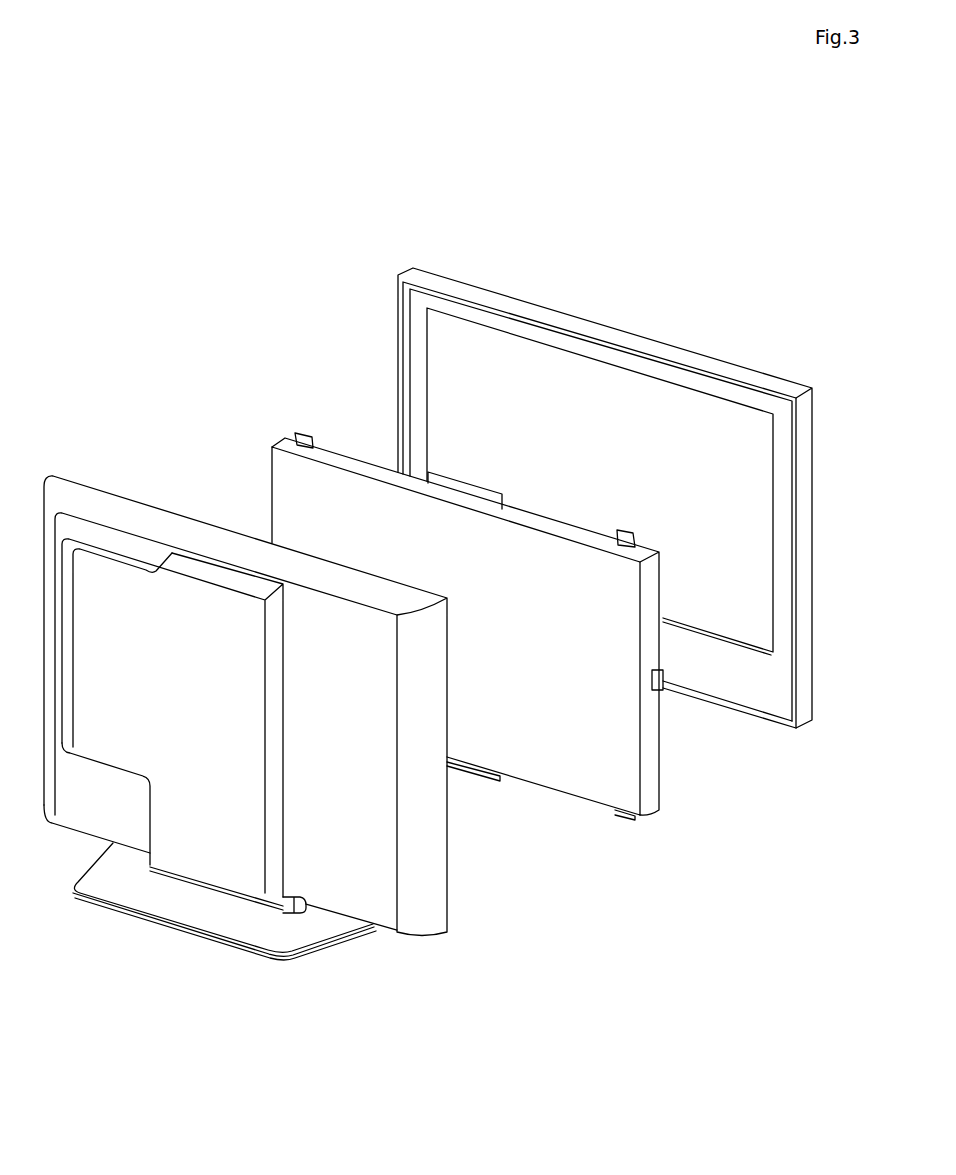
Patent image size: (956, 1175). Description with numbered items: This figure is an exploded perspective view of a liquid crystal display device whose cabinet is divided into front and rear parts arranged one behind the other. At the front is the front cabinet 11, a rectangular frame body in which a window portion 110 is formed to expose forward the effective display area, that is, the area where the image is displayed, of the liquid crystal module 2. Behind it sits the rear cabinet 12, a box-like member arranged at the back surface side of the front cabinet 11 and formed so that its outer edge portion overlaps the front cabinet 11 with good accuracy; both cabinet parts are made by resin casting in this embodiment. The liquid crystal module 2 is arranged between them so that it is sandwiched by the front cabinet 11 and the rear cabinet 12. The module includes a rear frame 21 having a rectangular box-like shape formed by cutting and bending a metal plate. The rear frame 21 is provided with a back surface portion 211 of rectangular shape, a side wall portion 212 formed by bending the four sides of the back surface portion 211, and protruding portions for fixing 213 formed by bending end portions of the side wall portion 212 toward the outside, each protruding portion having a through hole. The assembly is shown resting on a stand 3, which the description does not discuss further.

The front cabinet 11 is at (562, 491).
The window portion 110 is at (653, 412).
The rear cabinet 12 is at (433, 823).
The liquid crystal module 2 is at (464, 606).
The rear frame 21 is at (451, 644).
The back surface portion 211 is at (607, 763).
The side wall portion 212 is at (648, 762).
The protruding portions for fixing 213 is at (298, 432).
The stand base 3 is at (310, 932).